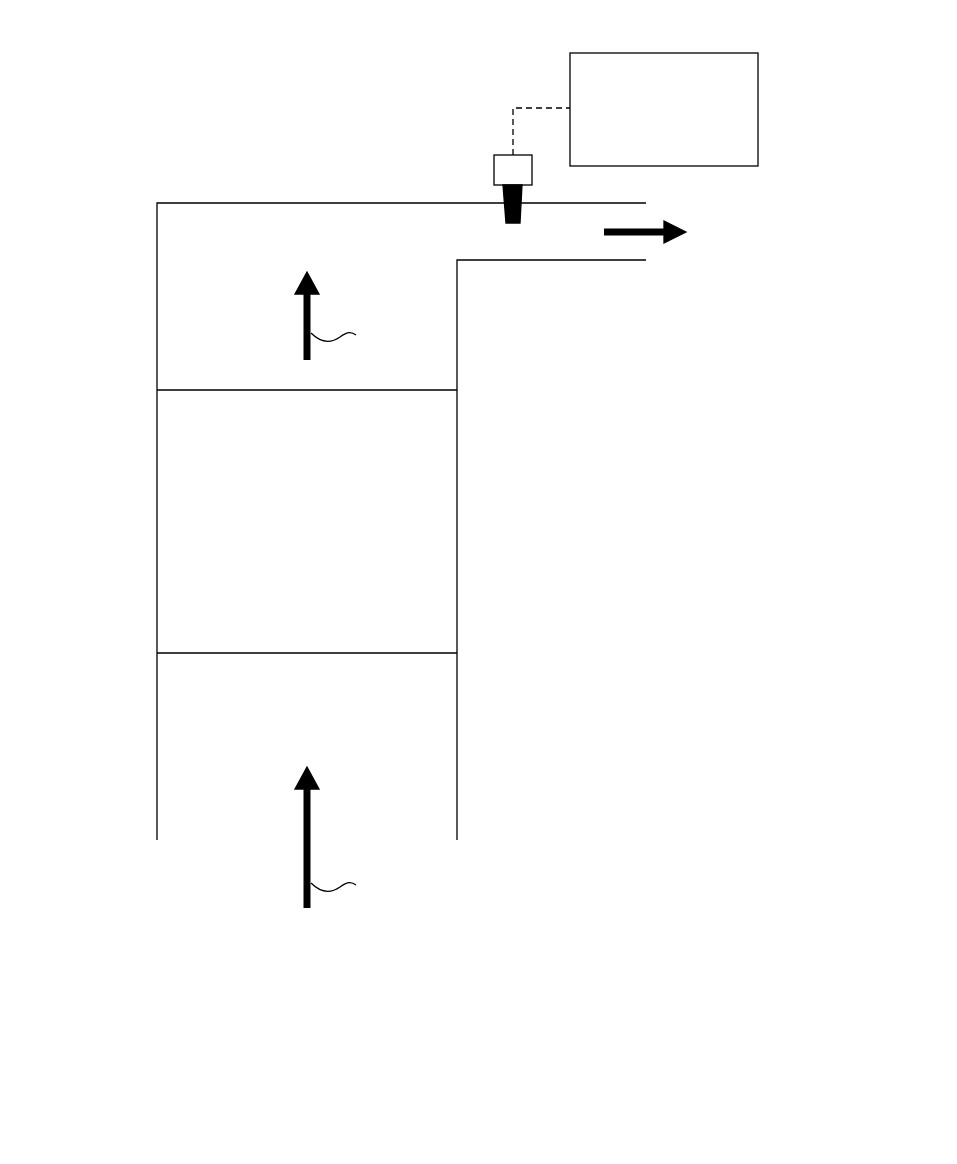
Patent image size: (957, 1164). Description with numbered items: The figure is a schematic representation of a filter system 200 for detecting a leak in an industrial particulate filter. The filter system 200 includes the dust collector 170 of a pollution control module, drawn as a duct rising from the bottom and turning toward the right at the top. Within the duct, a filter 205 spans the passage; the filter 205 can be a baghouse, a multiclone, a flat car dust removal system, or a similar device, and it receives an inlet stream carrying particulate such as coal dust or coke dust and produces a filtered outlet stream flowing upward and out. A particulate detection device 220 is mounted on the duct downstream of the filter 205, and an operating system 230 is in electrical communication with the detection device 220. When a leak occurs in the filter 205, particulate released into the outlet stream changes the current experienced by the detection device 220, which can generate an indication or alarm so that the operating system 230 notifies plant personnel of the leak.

The filter system 200 is at (157, 97).
The dust collector 170 is at (157, 332).
The filter 205 is at (291, 541).
The particulate detection device 220 is at (494, 173).
The operating system 230 is at (648, 128).